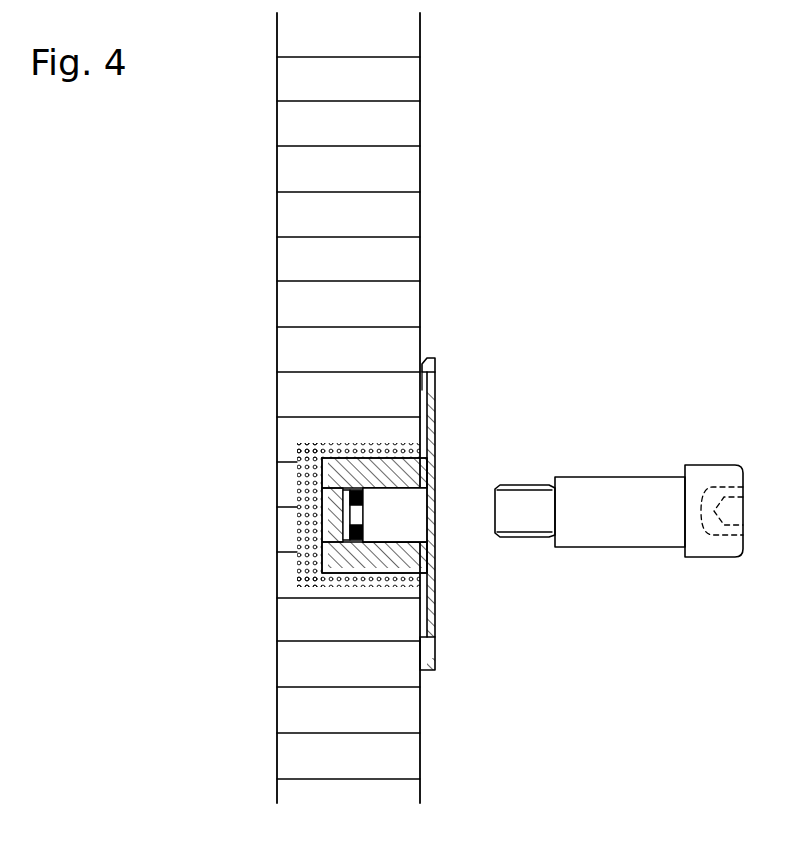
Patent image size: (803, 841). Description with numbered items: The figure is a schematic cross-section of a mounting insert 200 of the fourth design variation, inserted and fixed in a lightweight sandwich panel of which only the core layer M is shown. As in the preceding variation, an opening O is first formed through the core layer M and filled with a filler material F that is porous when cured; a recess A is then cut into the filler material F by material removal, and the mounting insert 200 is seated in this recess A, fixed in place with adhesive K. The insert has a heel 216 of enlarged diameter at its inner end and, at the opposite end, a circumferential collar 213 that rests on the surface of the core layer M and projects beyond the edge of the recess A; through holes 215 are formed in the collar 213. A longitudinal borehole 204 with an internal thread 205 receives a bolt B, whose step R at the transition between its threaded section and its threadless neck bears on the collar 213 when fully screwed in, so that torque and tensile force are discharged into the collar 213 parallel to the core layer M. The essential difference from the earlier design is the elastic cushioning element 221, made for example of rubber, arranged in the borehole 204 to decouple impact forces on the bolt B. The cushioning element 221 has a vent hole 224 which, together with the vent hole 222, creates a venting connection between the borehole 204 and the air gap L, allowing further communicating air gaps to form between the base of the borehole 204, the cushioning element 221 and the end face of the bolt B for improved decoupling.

The core layer M is at (287, 392).
The heel 216 is at (337, 453).
The filler material F is at (305, 563).
The opening O is at (318, 582).
The mounting insert 200 is at (454, 457).
The cushioning element 221 is at (378, 578).
The adhesive K is at (389, 455).
The recess A is at (348, 582).
The air gap L is at (322, 498).
The vent hole 224 is at (342, 505).
The vent hole 222 is at (338, 515).
The borehole 204 is at (425, 515).
The internal thread 205 is at (405, 540).
The collar 213 is at (433, 608).
The through hole 215 is at (437, 372).
The bolt B is at (635, 487).
The step R is at (557, 487).